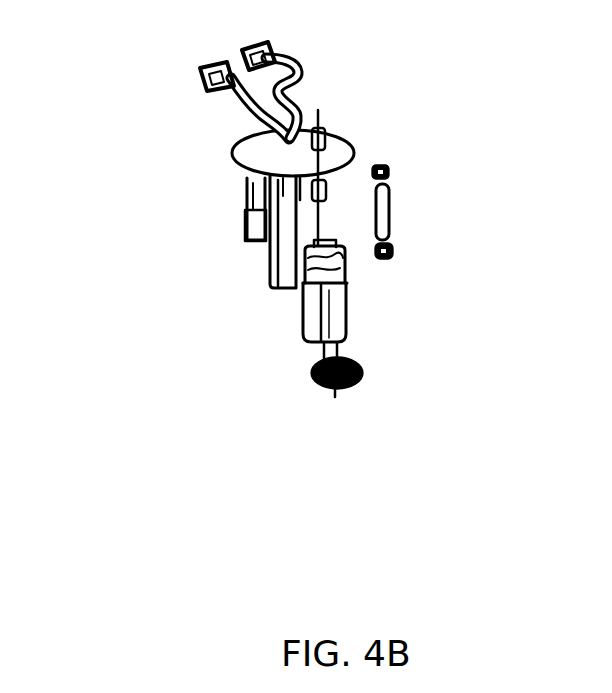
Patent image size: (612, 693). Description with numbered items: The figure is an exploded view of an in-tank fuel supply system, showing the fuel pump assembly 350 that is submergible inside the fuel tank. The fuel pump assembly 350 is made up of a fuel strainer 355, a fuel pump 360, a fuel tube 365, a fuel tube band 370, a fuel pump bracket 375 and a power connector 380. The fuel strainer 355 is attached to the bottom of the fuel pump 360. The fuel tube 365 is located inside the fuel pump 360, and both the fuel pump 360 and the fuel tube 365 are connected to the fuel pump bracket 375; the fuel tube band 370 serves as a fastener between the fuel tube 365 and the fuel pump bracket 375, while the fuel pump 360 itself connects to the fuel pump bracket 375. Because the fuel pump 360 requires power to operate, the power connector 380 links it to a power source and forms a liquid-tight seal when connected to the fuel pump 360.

The fuel pump assembly 350 is at (222, 143).
The fuel strainer 355 is at (313, 390).
The fuel pump 360 is at (307, 313).
The fuel tube 365 is at (390, 207).
The fuel tube band 370 is at (383, 166).
The fuel pump bracket 375 is at (340, 145).
The power connector 380 is at (247, 229).